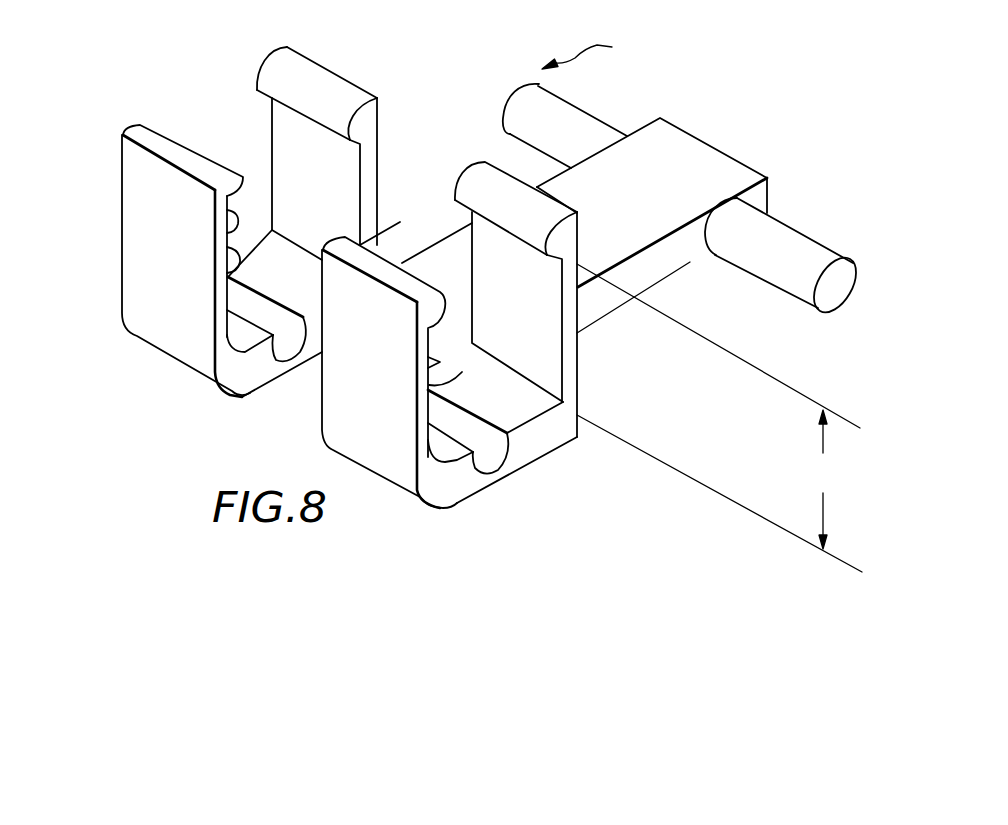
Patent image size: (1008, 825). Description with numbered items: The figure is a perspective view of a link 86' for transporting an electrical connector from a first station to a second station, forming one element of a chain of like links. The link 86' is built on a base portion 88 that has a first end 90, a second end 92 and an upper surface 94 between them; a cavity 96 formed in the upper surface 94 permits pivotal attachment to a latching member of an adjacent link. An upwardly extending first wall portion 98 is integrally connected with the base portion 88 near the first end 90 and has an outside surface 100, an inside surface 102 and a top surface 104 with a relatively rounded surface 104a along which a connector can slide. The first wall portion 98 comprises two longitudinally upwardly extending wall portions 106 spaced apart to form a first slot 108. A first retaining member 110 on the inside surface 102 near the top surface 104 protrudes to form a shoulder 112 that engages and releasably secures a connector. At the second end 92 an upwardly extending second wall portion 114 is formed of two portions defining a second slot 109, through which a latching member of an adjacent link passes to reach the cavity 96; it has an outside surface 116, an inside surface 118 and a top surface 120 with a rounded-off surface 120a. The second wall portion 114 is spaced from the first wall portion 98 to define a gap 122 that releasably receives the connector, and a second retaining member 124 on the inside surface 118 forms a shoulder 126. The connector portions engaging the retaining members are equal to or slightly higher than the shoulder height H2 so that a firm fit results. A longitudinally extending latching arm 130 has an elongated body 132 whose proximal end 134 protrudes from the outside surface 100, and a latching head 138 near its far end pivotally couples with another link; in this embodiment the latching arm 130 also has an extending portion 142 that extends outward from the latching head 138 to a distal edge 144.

The link 86' is at (593, 51).
The base portion 88 is at (573, 422).
The first end 90 is at (580, 372).
The second end 92 is at (410, 500).
The upper surface 94 is at (520, 407).
The cavity 96 is at (485, 462).
The first wall portion 98 is at (374, 150).
The outside surface 100 is at (380, 112).
The inside surface 102 is at (287, 135).
The top surface 104 is at (275, 76).
The rounded surface 104a is at (290, 80).
The upwardly extending wall portion 106 is at (378, 168).
The first slot 108 is at (405, 222).
The second slot 109 is at (310, 398).
The first retaining member 110 is at (320, 110).
The shoulder 112 is at (267, 78).
The second wall portion 114 is at (133, 193).
The outside surface 116 is at (128, 162).
The inside surface 118 is at (225, 272).
The top surface 120 is at (147, 133).
The rounded-off surface 120a is at (247, 185).
The gap 122 is at (417, 372).
The second retaining member 124 is at (227, 197).
The shoulder 126 is at (225, 235).
The latching arm 130 is at (728, 177).
The elongated body 132 is at (692, 168).
The proximal end 134 is at (445, 265).
The latching head 138 is at (848, 280).
The extending portion 142 is at (658, 133).
The distal edge 144 is at (688, 167).
The height of the shoulders H2 is at (824, 479).